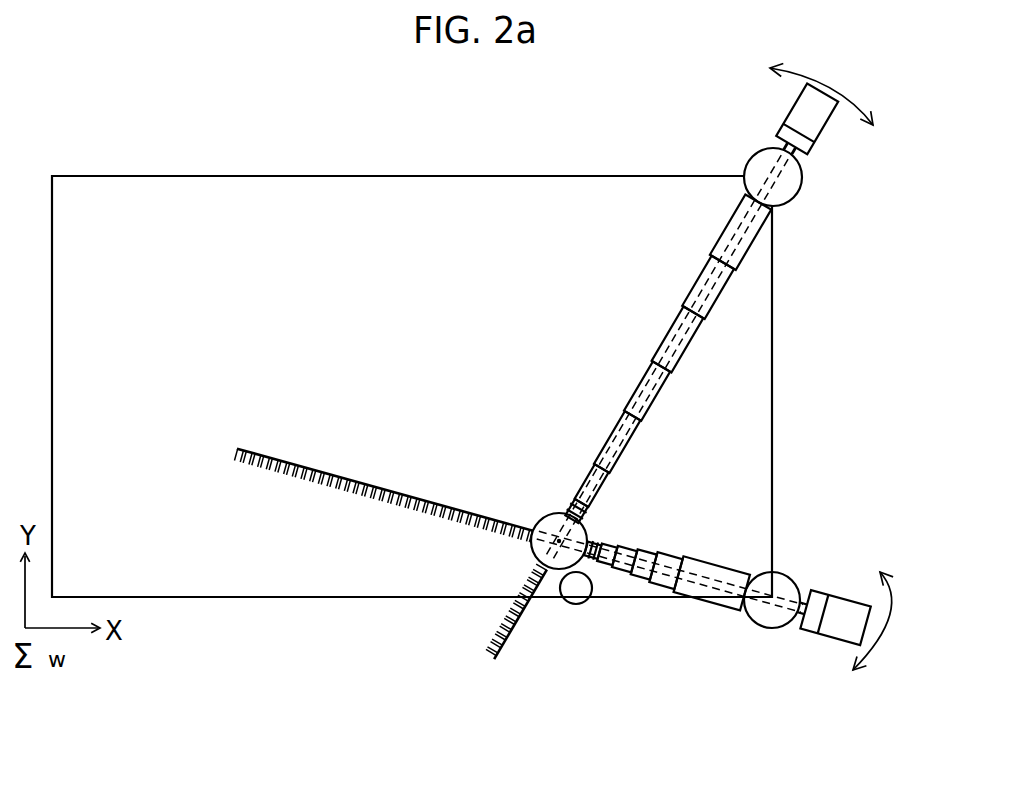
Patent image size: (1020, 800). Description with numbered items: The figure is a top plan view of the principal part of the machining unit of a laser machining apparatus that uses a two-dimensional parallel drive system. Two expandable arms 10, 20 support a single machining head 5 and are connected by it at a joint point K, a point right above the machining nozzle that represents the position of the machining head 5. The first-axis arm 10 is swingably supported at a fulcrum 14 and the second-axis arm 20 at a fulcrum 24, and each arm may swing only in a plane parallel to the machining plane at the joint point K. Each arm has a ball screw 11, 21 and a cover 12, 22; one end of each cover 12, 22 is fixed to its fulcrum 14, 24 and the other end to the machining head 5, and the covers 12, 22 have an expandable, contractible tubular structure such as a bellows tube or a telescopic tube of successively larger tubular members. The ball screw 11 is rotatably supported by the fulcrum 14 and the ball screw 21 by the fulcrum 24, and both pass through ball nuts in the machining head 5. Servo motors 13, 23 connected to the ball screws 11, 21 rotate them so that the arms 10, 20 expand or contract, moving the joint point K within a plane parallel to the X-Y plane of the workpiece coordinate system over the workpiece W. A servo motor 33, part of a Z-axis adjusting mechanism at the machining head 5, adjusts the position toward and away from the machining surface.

The machining head 5 is at (548, 520).
The expandable arm 10 is at (636, 592).
The ball screw 11 is at (707, 588).
The cover 12 is at (690, 562).
The servo motor 13 is at (832, 627).
The fulcrum 14 is at (763, 615).
The expandable arm 20 is at (660, 312).
The ball screw 21 is at (742, 230).
The cover 22 is at (723, 294).
The servo motor 23 is at (826, 125).
The fulcrum 24 is at (787, 190).
The servo motor 33 is at (578, 598).
The joint point K is at (562, 543).
The workpiece W is at (236, 573).